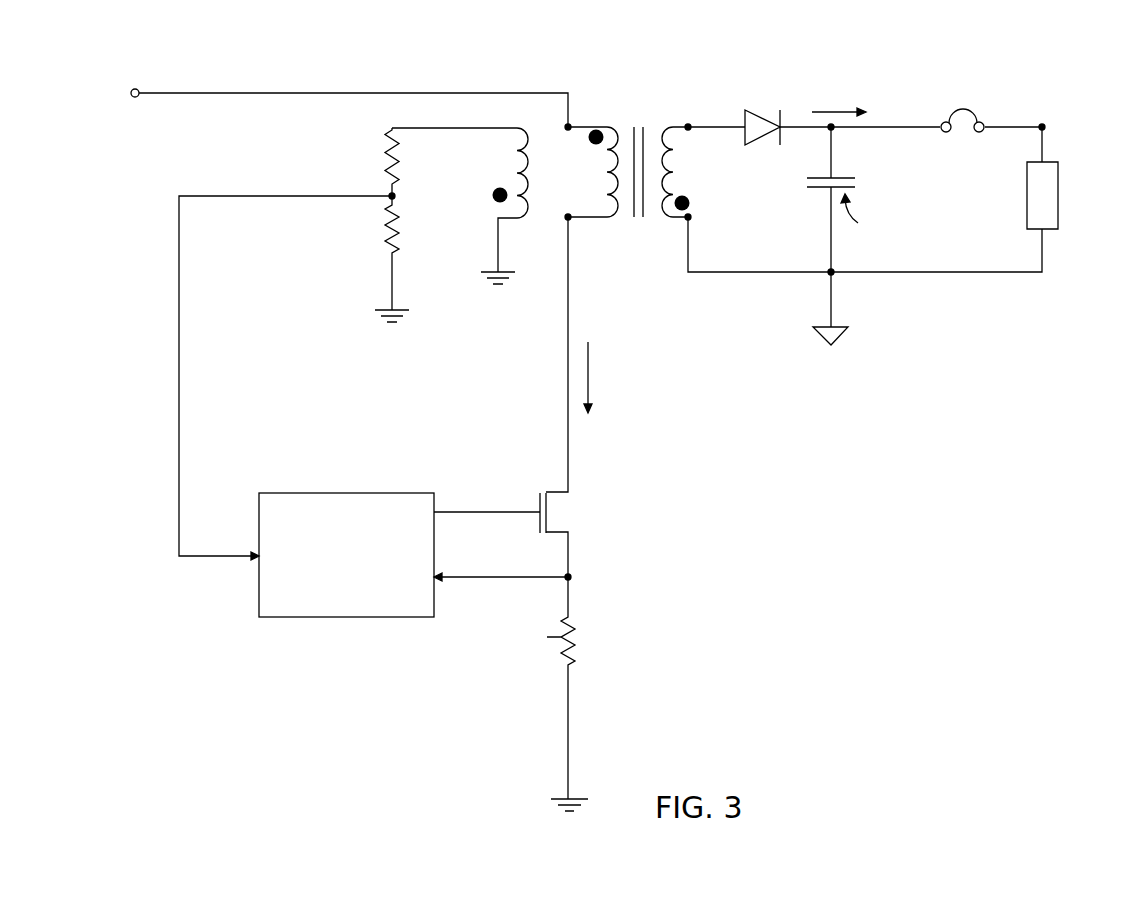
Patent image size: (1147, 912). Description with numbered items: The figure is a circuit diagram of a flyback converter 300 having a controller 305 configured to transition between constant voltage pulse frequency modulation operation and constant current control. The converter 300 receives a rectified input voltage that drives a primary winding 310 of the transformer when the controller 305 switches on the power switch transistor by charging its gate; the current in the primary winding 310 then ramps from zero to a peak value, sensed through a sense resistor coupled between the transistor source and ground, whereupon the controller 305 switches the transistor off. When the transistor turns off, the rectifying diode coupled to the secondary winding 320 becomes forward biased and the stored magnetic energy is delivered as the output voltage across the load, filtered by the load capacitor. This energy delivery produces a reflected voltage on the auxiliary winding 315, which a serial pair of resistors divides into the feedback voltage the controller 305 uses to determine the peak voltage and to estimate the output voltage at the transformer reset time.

The flyback converter 300 is at (636, 46).
The controller 305 is at (345, 493).
The primary winding 310 is at (604, 162).
The auxiliary winding 315 is at (516, 162).
The secondary winding 320 is at (679, 185).